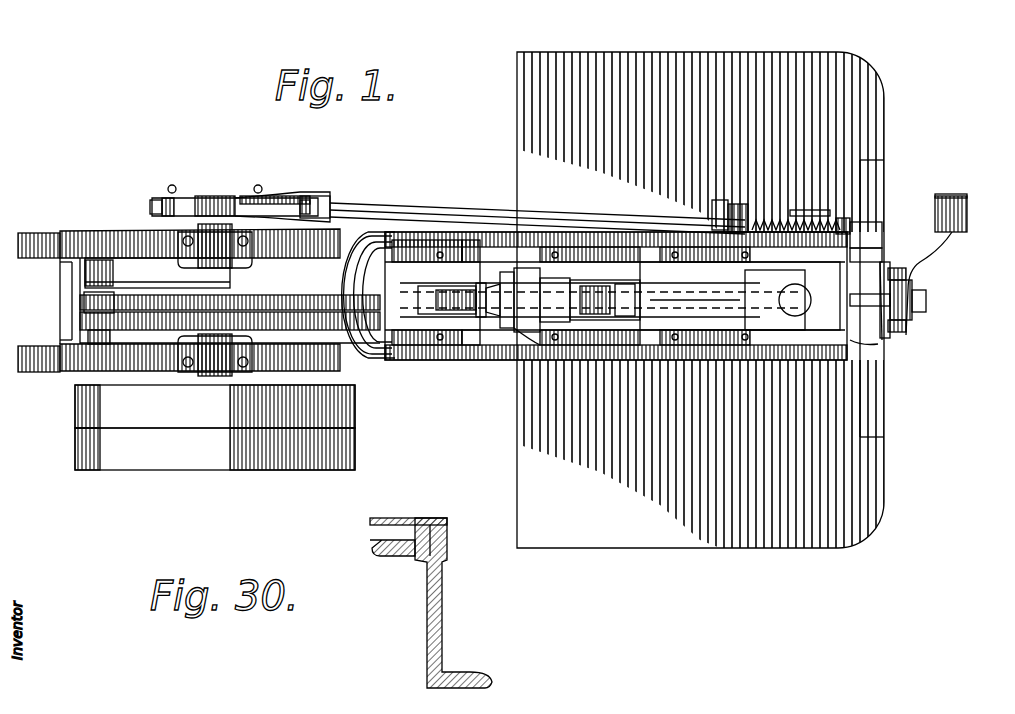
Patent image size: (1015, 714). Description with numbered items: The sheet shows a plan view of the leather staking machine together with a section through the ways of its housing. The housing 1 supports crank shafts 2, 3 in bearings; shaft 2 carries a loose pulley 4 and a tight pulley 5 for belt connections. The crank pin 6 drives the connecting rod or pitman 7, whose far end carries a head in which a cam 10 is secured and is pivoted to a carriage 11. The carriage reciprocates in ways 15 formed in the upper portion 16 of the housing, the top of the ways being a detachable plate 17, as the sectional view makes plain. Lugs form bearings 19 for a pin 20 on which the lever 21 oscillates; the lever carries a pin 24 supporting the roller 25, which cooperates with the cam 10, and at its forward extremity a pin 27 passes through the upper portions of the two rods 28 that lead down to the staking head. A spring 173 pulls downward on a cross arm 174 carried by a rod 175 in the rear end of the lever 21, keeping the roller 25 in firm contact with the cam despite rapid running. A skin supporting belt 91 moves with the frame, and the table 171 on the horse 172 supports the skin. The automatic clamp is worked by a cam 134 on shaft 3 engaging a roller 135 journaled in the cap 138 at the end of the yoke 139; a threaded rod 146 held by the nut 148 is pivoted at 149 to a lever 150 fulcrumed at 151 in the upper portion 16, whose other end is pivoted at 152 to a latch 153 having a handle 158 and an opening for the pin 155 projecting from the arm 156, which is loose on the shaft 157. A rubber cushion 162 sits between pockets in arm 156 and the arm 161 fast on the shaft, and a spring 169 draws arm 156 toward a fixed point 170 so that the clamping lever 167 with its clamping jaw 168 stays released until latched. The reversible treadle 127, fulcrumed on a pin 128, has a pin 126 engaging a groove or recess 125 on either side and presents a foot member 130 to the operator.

In FIG. 1, the housing 1 is at (39, 303).
In FIG. 30, the housing 1 is at (453, 603).
In FIG. 1, the crank shaft 2 is at (238, 331).
In FIG. 1, the crank shaft 3 is at (220, 270).
In FIG. 1, the loose pulley 4 is at (215, 449).
In FIG. 1, the tight pulley 5 is at (215, 406).
In FIG. 1, the crank pin 6 is at (98, 340).
In FIG. 1, the connecting rod or pitman 7 is at (320, 297).
In FIG. 1, the cam 10 is at (445, 312).
In FIG. 1, the carriage 11 is at (408, 313).
In FIG. 30, the ways 15 is at (395, 533).
In FIG. 30, the upper portion of the housing 16 is at (454, 540).
In FIG. 1, the detachable plate 17 is at (638, 268).
In FIG. 30, the detachable plate 17 is at (408, 511).
In FIG. 1, the bearings 19 is at (512, 272).
In FIG. 1, the pin 20 is at (486, 318).
In FIG. 1, the lever 21 is at (532, 295).
In FIG. 1, the pin 24 is at (482, 280).
In FIG. 1, the roller 25 is at (462, 244).
In FIG. 1, the pin 27 is at (530, 347).
In FIG. 1, the rods 28 is at (583, 292).
In FIG. 1, the skin supporting belt 91 is at (675, 303).
In FIG. 1, the groove or recess 125 is at (895, 330).
In FIG. 1, the pin 126 is at (912, 290).
In FIG. 1, the lever or treadle 127 is at (922, 256).
In FIG. 1, the pin 128 is at (926, 300).
In FIG. 1, the foot member 130 is at (969, 214).
In FIG. 1, the cam 134 is at (205, 200).
In FIG. 1, the roller 135 is at (158, 207).
In FIG. 1, the cap 138 is at (170, 188).
In FIG. 1, the yoke 139 is at (278, 196).
In FIG. 1, the threaded rod 146 is at (430, 212).
In FIG. 1, the nut 148 is at (318, 202).
In FIG. 1, the pivot 149 is at (716, 204).
In FIG. 1, the lever 150 is at (720, 305).
In FIG. 1, the fulcrum 151 is at (736, 204).
In FIG. 1, the pivot 152 is at (742, 230).
In FIG. 1, the latch 153 is at (766, 300).
In FIG. 1, the pin 155 is at (862, 228).
In FIG. 1, the arm 156 is at (860, 255).
In FIG. 1, the shaft 157 is at (870, 344).
In FIG. 1, the handle 158 is at (952, 194).
In FIG. 1, the arm 161 is at (789, 295).
In FIG. 1, the cushion or spring 162 is at (821, 188).
In FIG. 1, the clamping lever 167 is at (876, 272).
In FIG. 1, the clamping jaw 168 is at (892, 268).
In FIG. 1, the spring 169 is at (838, 222).
In FIG. 1, the fixed point 170 is at (762, 222).
In FIG. 1, the table 171 is at (700, 303).
In FIG. 1, the horse 172 is at (362, 360).
In FIG. 1, the spring 173 is at (440, 420).
In FIG. 1, the cross arm 174 is at (493, 300).
In FIG. 1, the rod 175 is at (475, 345).